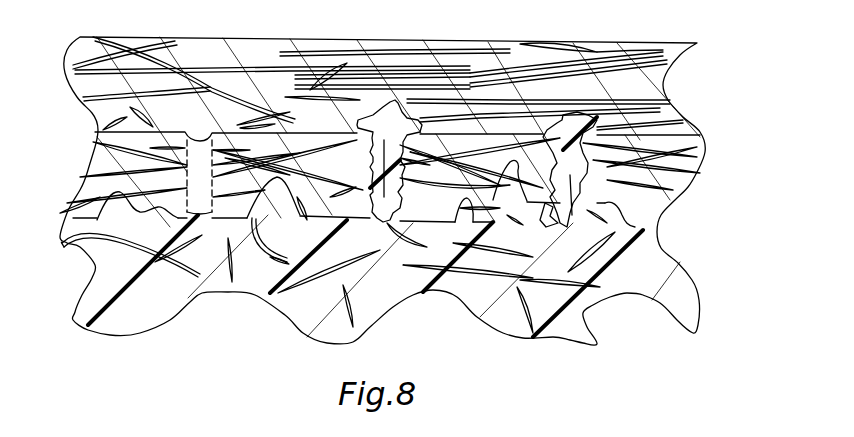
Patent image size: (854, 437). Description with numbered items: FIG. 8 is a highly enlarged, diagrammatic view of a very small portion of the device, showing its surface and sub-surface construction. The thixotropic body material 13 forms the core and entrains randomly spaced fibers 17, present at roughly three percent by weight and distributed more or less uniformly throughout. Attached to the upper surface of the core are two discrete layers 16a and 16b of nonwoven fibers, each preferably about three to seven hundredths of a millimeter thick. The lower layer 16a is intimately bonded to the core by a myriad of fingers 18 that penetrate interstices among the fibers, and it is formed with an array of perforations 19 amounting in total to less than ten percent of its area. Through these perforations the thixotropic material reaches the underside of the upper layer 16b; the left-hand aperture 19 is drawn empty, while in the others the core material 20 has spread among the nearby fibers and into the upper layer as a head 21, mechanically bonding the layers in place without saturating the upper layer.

The thixotropic body material 13 is at (660, 277).
The lower layer of nonwoven fibers 16a is at (670, 110).
The upper layer of nonwoven fibers 16b is at (680, 177).
The randomly spaced fibers 17 is at (590, 335).
The fingers 18 is at (62, 243).
The perforations 19 is at (199, 165).
The core material 20 is at (366, 150).
The head 21 is at (397, 113).